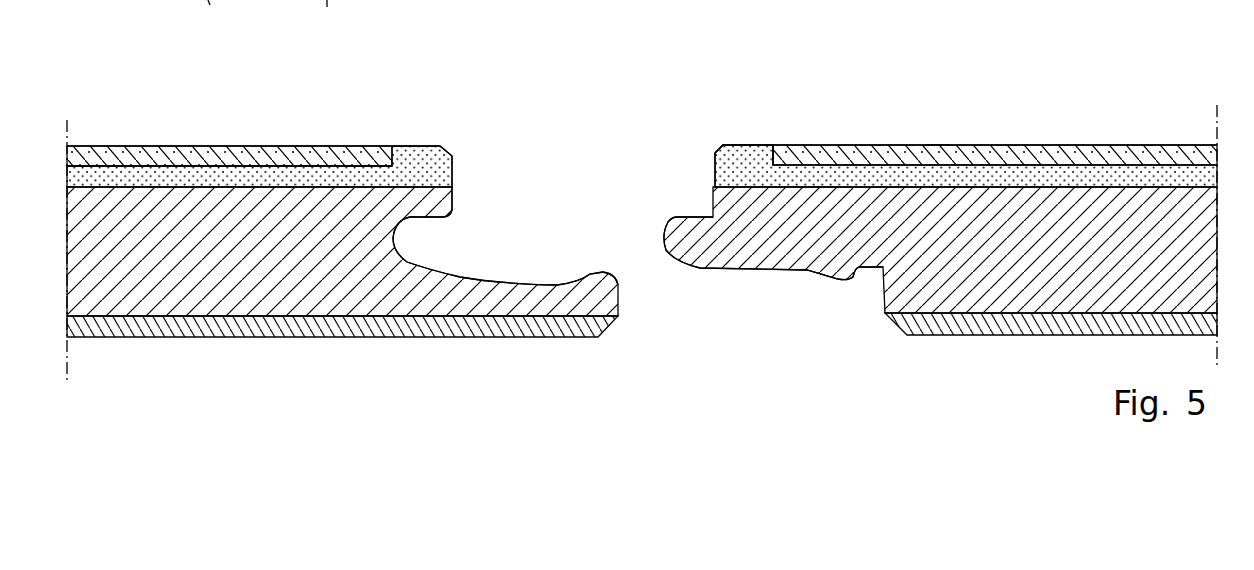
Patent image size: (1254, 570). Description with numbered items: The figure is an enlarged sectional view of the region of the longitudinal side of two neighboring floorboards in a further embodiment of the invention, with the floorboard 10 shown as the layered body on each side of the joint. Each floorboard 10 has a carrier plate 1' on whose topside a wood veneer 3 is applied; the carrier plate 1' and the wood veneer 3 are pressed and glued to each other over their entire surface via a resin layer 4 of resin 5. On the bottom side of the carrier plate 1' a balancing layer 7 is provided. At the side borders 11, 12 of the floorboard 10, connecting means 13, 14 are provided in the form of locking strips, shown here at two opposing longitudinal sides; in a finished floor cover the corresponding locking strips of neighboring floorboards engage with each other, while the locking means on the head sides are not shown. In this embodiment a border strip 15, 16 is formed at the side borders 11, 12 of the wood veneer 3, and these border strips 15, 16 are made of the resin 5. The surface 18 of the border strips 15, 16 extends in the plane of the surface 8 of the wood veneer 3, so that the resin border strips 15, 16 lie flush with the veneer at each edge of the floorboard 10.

The carrier plate 1' is at (642, 317).
The wood veneer 3 is at (147, 146).
The resin layer 4 is at (117, 176).
The resin 5 is at (285, 178).
The balancing layer 7 is at (1003, 328).
The surface of the wood veneer 8 is at (935, 145).
The floorboard 10 is at (222, 118).
The side border 11 is at (485, 116).
The side border 12 is at (650, 135).
The connecting means 13 is at (509, 250).
The connecting means 14 is at (767, 295).
The border strip 15 is at (422, 146).
The border strip 16 is at (752, 145).
The surface of the border strips 18 is at (753, 145).